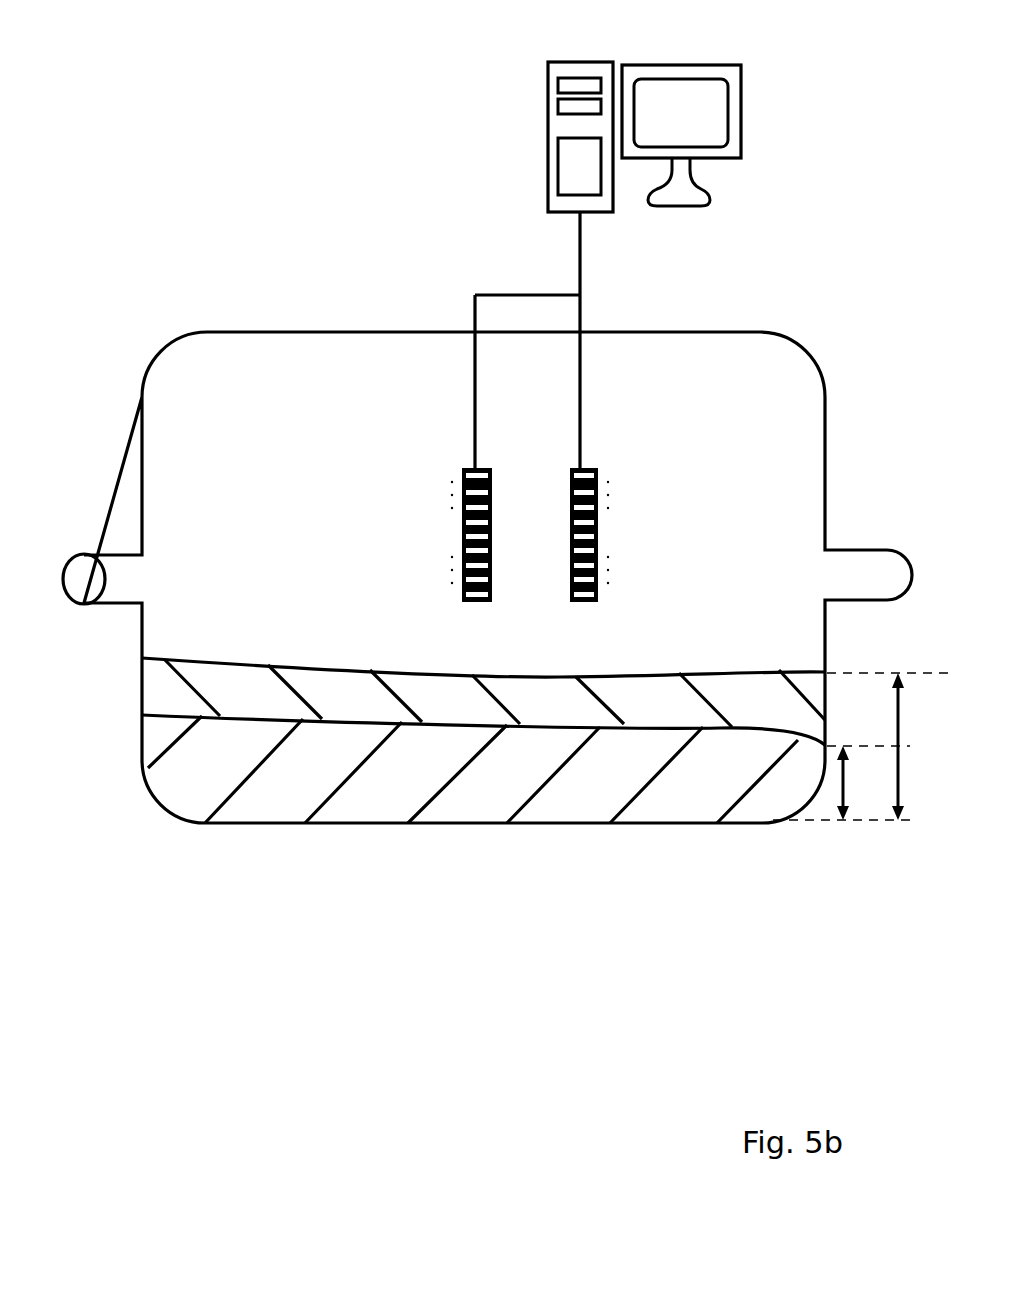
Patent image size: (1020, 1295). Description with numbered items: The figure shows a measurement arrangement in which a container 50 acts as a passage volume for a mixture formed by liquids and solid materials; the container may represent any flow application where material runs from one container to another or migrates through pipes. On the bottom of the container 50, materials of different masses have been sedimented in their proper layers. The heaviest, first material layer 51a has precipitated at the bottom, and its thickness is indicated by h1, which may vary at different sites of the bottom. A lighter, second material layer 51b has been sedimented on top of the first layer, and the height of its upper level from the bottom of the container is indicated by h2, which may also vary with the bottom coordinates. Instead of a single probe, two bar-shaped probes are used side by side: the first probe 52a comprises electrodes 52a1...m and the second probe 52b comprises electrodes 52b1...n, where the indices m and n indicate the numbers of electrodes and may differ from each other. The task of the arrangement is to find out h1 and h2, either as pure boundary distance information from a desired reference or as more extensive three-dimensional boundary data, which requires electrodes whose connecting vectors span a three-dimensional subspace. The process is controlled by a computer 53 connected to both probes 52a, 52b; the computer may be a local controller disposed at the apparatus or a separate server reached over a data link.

The container 50 is at (292, 332).
The first material layer 51a is at (268, 802).
The second material layer 51b is at (222, 685).
The first probe 52a is at (462, 468).
The electrodes of the first probe 52a1...m is at (462, 528).
The second probe 52b is at (598, 468).
The electrodes of the second probe 52b1...n is at (598, 537).
The computer 53 is at (548, 112).
The thickness of the first material layer h1 is at (841, 783).
The height of the upper level of the second material layer h2 is at (888, 746).